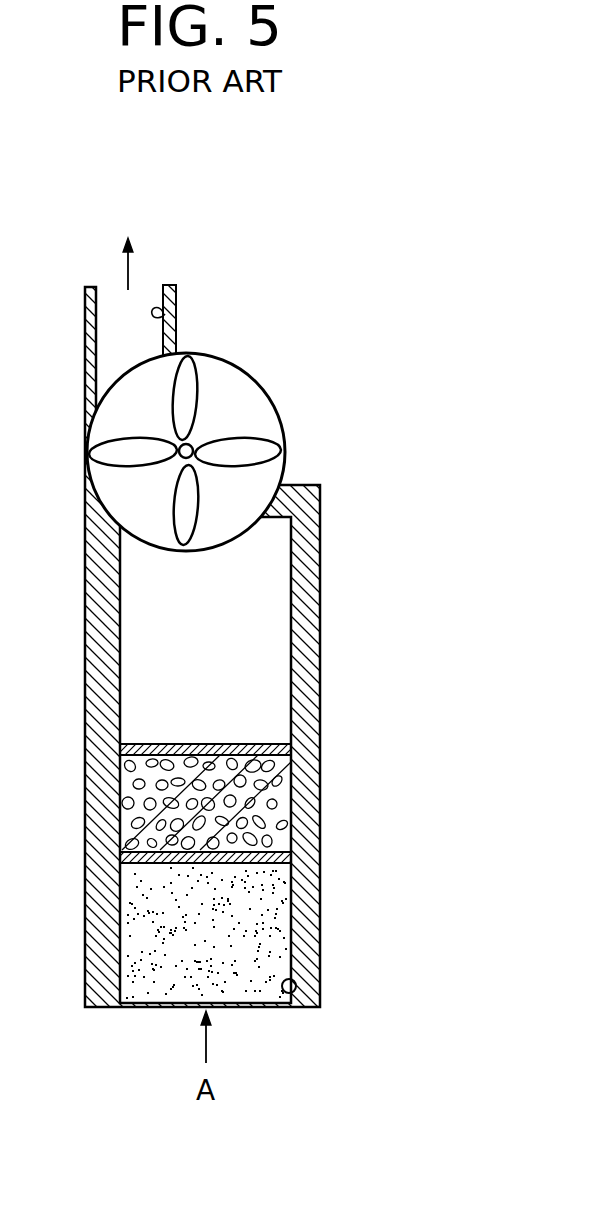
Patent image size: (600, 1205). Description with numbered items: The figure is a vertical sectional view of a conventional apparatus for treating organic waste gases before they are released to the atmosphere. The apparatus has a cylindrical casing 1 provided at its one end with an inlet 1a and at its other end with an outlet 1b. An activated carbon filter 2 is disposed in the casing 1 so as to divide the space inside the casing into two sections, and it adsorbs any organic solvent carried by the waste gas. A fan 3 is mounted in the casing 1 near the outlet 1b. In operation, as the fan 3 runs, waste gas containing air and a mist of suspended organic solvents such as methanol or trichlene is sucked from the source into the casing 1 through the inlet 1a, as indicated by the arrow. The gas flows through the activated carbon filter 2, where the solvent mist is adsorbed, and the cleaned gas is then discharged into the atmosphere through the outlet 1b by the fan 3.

The cylindrical casing 1 is at (324, 627).
The inlet 1a is at (294, 991).
The outlet 1b is at (176, 312).
The activated carbon filter 2 is at (283, 757).
The fan 3 is at (273, 402).